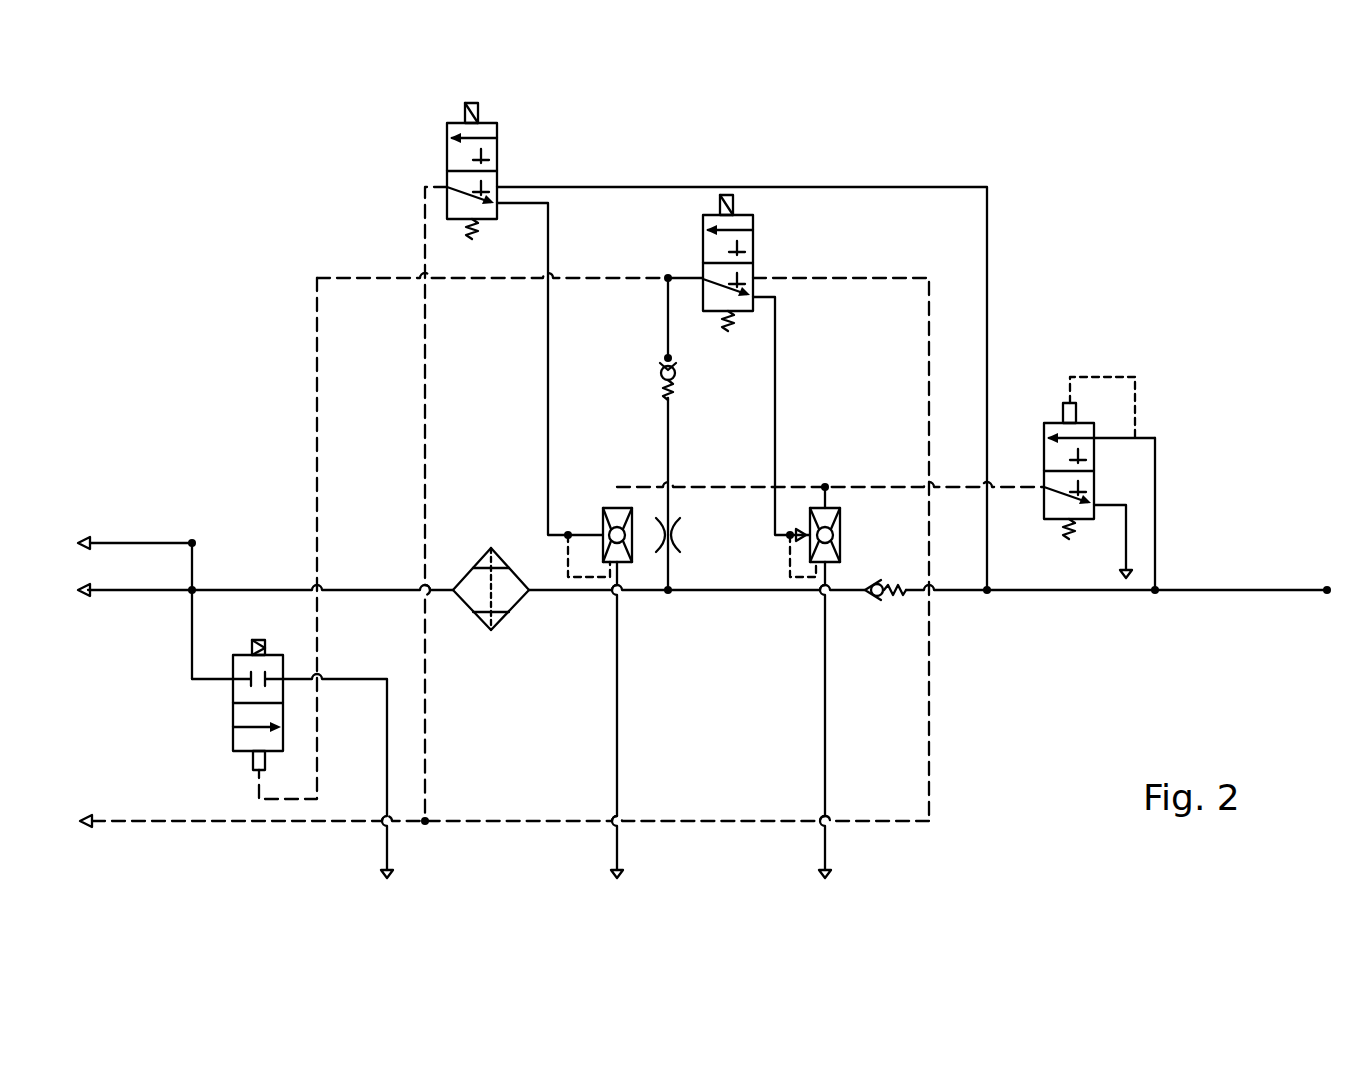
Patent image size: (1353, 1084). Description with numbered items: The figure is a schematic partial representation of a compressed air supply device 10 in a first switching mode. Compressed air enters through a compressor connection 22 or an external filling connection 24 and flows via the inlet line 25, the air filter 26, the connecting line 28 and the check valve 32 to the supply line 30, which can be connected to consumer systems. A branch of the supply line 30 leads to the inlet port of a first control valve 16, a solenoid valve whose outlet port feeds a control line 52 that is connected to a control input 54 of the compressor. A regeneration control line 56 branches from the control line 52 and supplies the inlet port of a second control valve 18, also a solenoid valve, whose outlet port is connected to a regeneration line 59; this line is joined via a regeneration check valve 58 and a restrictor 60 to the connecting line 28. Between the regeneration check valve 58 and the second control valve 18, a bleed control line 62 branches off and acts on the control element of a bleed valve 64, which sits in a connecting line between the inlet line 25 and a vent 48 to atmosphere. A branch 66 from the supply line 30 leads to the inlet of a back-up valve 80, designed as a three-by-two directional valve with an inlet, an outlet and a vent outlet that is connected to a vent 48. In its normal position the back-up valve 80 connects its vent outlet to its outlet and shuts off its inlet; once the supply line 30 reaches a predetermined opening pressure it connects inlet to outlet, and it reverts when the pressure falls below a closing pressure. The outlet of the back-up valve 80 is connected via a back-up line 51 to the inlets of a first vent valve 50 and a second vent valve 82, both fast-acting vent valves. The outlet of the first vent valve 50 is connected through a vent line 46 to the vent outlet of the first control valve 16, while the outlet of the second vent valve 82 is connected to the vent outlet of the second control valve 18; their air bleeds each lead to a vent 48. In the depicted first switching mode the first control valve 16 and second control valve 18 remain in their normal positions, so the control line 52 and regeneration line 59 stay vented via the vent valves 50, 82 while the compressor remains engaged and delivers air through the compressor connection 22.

The compressed air supply device 10 is at (218, 226).
The first control valve 16 is at (446, 150).
The second control valve 18 is at (753, 238).
The compressor connection 22 is at (85, 540).
The external filling connection 24 is at (85, 596).
The inlet line 25 is at (381, 588).
The air filter 26 is at (512, 607).
The connecting line 28 is at (700, 594).
The supply line 30 is at (1260, 588).
The check valve 32 is at (881, 600).
The vent line 46 is at (547, 397).
The vent 48 is at (382, 876).
The first vent valve 50 is at (602, 507).
The back-up line 51 is at (880, 486).
The control line 52 is at (427, 345).
The control input 54 is at (80, 816).
The regeneration control line 56 is at (930, 698).
The regeneration check valve 58 is at (680, 378).
The regeneration line 59 is at (666, 305).
The restrictor 60 is at (680, 538).
The bleed control line 62 is at (601, 276).
The bleed valve 64 is at (233, 715).
The branch 66 is at (1160, 588).
The back-up valve 80 is at (1043, 458).
The second vent valve 82 is at (846, 538).